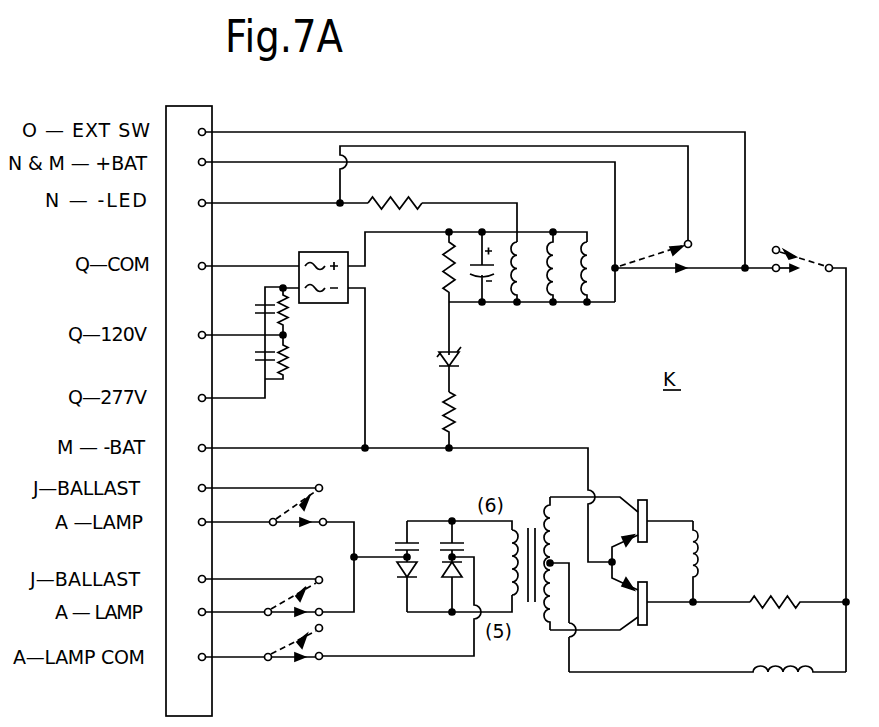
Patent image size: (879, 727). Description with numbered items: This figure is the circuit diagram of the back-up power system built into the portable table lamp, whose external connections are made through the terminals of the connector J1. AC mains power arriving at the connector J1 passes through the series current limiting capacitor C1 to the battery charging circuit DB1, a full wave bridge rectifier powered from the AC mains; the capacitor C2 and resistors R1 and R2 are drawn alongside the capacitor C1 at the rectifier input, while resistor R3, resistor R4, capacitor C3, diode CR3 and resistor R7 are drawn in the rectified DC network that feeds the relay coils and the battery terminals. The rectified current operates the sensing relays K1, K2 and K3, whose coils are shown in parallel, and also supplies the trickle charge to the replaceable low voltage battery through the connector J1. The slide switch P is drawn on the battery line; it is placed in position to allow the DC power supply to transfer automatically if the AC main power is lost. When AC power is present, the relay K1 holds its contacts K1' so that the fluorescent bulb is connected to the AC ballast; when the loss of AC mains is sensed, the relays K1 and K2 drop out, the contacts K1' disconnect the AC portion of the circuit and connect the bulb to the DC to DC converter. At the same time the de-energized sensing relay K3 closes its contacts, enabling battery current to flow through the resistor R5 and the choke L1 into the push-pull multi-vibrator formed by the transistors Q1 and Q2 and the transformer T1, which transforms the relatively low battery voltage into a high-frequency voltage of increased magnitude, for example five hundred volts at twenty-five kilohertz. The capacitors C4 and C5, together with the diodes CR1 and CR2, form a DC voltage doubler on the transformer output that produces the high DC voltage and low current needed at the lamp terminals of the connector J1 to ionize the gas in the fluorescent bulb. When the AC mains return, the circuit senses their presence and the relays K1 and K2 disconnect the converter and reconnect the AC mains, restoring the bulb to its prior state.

The connector J1 is at (189, 411).
The resistor R1 is at (295, 310).
The resistor R2 is at (291, 355).
The resistor R3 is at (395, 190).
The resistor R4 is at (433, 292).
The resistor R5 is at (799, 586).
The resistor R7 is at (467, 420).
The series current limiting capacitor C1 is at (251, 316).
The capacitor C2 is at (251, 361).
The capacitor C3 is at (475, 278).
The capacitor C4 is at (398, 540).
The capacitor C5 is at (447, 538).
The diode CR1 is at (389, 584).
The diode CR2 is at (437, 584).
The diode CR3 is at (422, 364).
The battery charging circuit DB1 is at (435, 338).
The relay K1 is at (524, 287).
The relay K2 is at (554, 278).
The sensing relay K3 is at (588, 278).
The relay contacts K1' is at (299, 537).
The slide switch P is at (680, 268).
The transistor Q1 is at (651, 526).
The transistor Q2 is at (681, 597).
The transformer T1 is at (677, 568).
The choke L1 is at (707, 658).